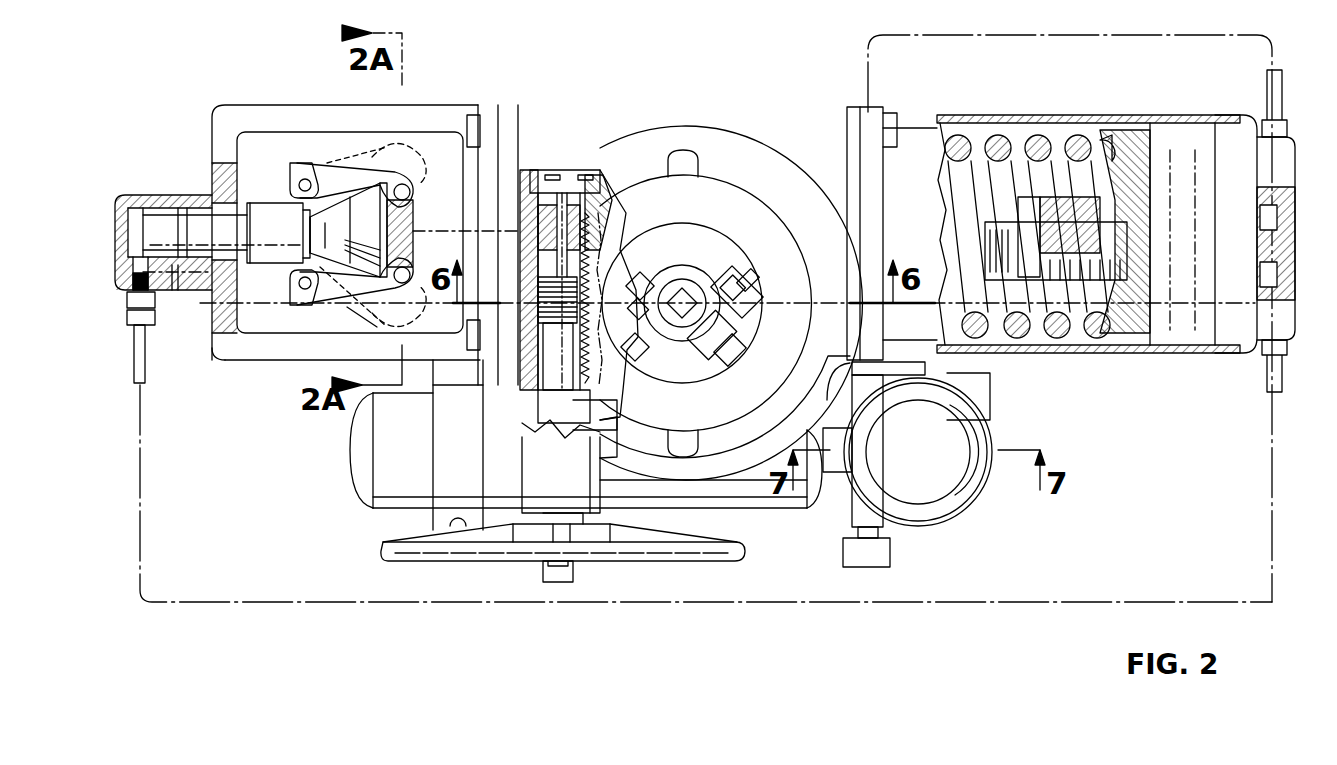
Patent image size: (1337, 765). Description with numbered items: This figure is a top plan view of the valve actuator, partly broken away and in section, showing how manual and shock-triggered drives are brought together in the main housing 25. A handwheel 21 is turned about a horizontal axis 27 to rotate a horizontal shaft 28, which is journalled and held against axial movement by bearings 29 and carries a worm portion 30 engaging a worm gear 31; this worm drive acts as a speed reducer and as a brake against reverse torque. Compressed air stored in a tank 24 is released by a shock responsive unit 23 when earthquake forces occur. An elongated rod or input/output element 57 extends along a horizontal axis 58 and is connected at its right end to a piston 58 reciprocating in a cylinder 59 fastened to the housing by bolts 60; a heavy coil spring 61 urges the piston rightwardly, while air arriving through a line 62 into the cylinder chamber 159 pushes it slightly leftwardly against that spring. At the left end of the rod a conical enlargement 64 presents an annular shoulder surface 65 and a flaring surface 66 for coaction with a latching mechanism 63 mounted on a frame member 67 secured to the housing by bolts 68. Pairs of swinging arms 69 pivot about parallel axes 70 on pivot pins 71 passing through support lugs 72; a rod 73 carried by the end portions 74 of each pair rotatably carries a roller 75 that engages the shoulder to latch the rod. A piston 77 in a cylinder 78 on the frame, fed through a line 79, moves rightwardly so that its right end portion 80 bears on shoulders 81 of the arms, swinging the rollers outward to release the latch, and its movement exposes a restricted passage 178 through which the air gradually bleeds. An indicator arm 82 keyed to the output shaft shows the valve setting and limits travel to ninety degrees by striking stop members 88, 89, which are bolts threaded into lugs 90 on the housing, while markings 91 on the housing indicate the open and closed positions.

The handwheel 21 is at (748, 553).
The shock responsive unit 23 is at (992, 416).
The tank 24 is at (352, 455).
The main housing 25 is at (528, 172).
The horizontal axis 27 is at (560, 170).
The horizontal shaft 28 is at (556, 423).
The bearings 29 is at (617, 188).
The worm portion 30 is at (596, 280).
The worm gear 31 is at (621, 224).
The input/output element 57 is at (428, 218).
The piston 58 is at (513, 290).
The cylinder 59 is at (1118, 352).
The bolts 60 is at (888, 115).
The coil spring 61 is at (1040, 148).
The line 62 is at (1036, 36).
The latching mechanism 63 is at (405, 128).
The enlargement 64 is at (358, 250).
The annular shoulder surface 65 is at (404, 207).
The flaring surface 66 is at (338, 180).
The frame member 67 is at (225, 108).
The bolts 68 is at (481, 112).
The swinging arms 69 is at (332, 167).
The parallel axes 70 is at (300, 180).
The pivot pin 71 is at (308, 306).
The support lug 72 is at (322, 345).
The rod 73 is at (392, 280).
The end portions 74 is at (412, 288).
The roller 75 is at (436, 236).
The piston 77 is at (153, 215).
The cylinder 78 is at (128, 205).
The line 79 is at (858, 604).
The right end portion 80 is at (256, 203).
The shoulders 81 is at (298, 229).
The indicator arm 82 is at (708, 352).
The stop member 88 is at (757, 315).
The stop member 89 is at (645, 322).
The lugs 90 is at (742, 275).
The markings 91 is at (742, 340).
The cylinder chamber 159 is at (1188, 350).
The restricted passage 178 is at (186, 292).